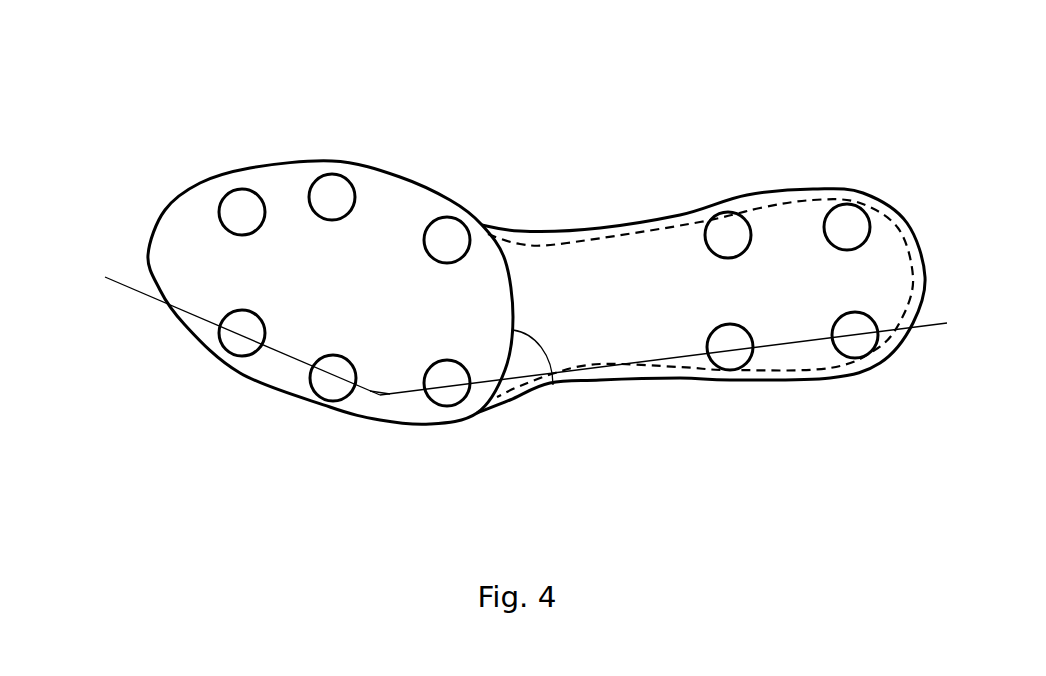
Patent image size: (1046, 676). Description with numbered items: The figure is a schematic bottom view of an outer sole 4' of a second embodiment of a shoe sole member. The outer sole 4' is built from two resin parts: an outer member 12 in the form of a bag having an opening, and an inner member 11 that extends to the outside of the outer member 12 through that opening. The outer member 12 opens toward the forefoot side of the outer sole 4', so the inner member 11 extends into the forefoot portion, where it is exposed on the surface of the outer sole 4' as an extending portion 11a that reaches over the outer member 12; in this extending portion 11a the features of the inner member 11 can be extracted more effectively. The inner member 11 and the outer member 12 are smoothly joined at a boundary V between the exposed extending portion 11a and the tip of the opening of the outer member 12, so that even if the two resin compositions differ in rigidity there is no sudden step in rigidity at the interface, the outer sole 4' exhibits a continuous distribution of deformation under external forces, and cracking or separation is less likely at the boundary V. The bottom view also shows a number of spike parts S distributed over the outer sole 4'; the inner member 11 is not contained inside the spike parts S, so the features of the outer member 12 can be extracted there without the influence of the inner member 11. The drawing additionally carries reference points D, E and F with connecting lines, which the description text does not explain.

The outer sole 4' is at (500, 272).
The inner member 11 is at (532, 302).
The extending portion 11a is at (197, 275).
The outer member 12 is at (591, 230).
The spike parts S is at (438, 240).
The reference point D is at (232, 336).
The reference point E is at (380, 413).
The reference point F is at (668, 359).
The boundary V is at (553, 385).